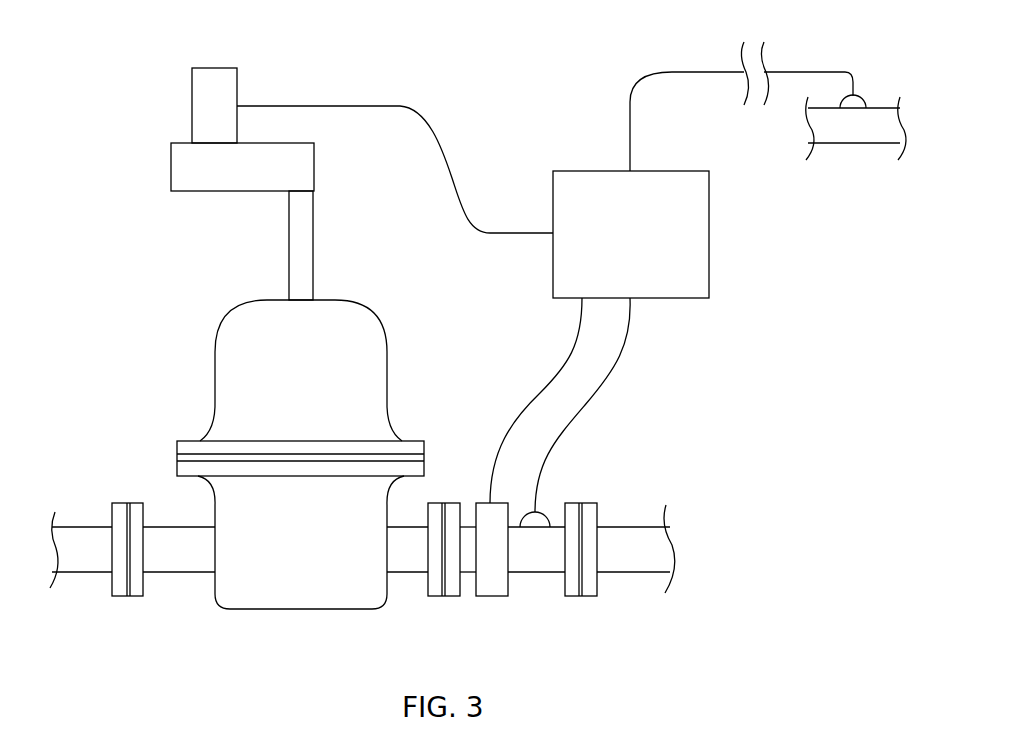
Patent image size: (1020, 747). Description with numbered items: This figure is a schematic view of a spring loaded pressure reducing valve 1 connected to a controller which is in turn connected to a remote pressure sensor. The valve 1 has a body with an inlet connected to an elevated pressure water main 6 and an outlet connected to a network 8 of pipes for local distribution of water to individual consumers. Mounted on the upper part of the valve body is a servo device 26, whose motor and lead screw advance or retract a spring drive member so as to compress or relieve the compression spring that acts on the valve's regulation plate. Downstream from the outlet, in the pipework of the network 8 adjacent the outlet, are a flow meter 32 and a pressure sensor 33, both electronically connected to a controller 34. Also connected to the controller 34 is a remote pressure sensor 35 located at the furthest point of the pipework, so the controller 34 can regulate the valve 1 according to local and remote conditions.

The spring loaded pressure reducing valve 1 is at (203, 340).
The servo device 26 is at (164, 128).
The elevated pressure water main 6 is at (78, 527).
The network of pipes 8 is at (631, 575).
The flow meter 32 is at (492, 567).
The pressure sensor 33 is at (548, 506).
The controller 34 is at (613, 249).
The remote pressure sensor 35 is at (865, 95).